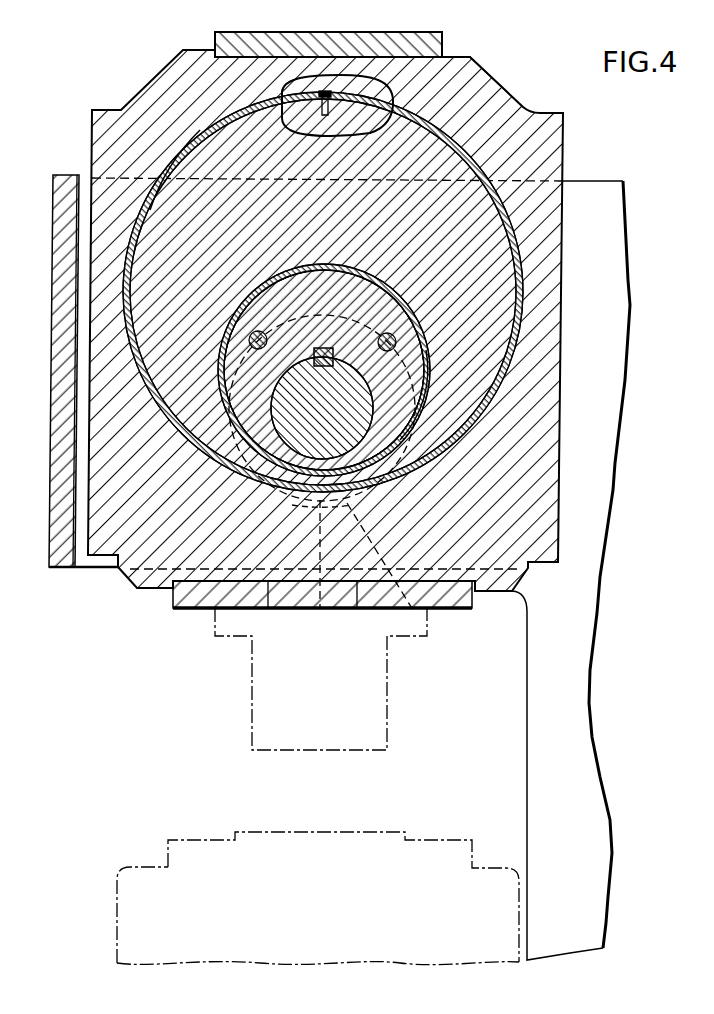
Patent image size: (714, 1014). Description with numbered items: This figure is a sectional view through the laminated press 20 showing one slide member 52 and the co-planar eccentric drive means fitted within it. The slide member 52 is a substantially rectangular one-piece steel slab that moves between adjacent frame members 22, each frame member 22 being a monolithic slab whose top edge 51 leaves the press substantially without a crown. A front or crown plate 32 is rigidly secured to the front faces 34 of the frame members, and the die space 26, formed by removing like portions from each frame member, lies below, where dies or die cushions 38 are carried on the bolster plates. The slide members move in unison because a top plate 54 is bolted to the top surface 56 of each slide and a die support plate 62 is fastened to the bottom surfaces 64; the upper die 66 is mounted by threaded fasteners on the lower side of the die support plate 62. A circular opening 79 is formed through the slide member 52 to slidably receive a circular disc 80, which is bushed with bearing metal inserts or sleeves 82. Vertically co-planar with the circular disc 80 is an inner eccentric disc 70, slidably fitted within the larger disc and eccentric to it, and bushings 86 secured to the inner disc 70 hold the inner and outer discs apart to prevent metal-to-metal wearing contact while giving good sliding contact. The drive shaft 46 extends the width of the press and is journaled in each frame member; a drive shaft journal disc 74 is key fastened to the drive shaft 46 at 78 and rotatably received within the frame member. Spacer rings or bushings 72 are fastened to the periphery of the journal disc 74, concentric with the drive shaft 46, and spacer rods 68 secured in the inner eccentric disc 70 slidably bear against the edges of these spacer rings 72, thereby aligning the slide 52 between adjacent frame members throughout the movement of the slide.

The laminated press 20 is at (563, 623).
The frame member 22 is at (600, 487).
The die space 26 is at (318, 898).
The front or crown plate 32 is at (60, 214).
The front faces 34 is at (75, 352).
The dies or die cushions 38 is at (133, 908).
The drive shaft 46 is at (322, 408).
The top edge 51 is at (602, 181).
The slide member 52 is at (497, 92).
The top plate 54 is at (217, 40).
The top surface 56 is at (446, 54).
The die support plate 62 is at (357, 610).
The bottom surfaces 64 is at (268, 610).
The upper die 66 is at (262, 707).
The spacer rods 68 is at (260, 331).
The inner eccentric disc 70 is at (316, 272).
The spacer rings or bushings 72 is at (318, 613).
The drive shaft journal disc 74 is at (428, 384).
The key fastening 78 is at (318, 350).
The circular opening 79 is at (175, 163).
The circular disc 80 is at (500, 207).
The bearing metal inserts or sleeves 82 is at (540, 120).
The bushings 86 is at (368, 277).